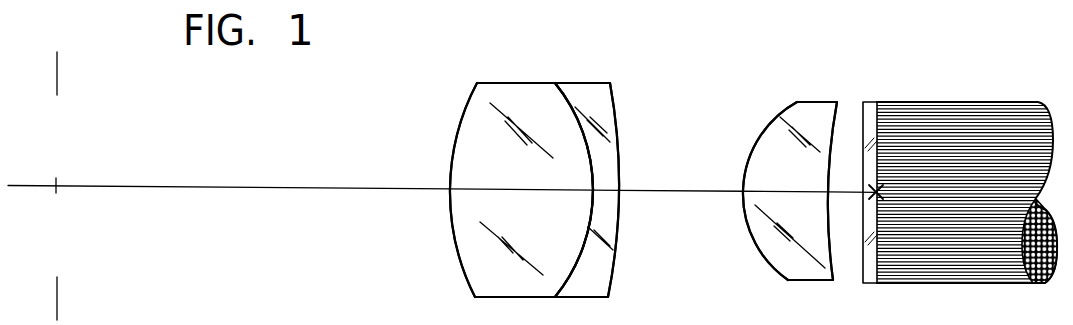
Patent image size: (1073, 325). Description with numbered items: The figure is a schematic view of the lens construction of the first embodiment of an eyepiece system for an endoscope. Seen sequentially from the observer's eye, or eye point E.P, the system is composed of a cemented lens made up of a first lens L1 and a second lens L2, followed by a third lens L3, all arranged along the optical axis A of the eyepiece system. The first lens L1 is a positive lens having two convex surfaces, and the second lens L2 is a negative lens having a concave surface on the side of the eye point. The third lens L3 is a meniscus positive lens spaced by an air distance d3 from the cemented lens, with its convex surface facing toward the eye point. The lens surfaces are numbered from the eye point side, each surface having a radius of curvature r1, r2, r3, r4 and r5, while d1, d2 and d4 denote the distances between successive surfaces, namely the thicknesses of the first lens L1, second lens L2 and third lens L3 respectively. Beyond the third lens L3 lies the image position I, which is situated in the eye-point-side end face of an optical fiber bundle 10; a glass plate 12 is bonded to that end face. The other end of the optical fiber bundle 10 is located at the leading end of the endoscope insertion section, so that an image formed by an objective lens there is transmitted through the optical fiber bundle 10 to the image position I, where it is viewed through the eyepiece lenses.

The eye point E.P is at (62, 184).
The optical axis A is at (243, 188).
The first lens L1 is at (518, 90).
The second lens L2 is at (597, 92).
The third lens L3 is at (817, 110).
The radius of curvature of the first surface r1 is at (467, 277).
The radius of curvature of the second surface r2 is at (557, 288).
The radius of curvature of the third surface r3 is at (615, 272).
The radius of curvature of the fourth surface r4 is at (777, 273).
The radius of curvature of the fifth surface r5 is at (835, 272).
The distance between the first surface and the second surface d1 is at (490, 191).
The distance between the second surface and the third surface d2 is at (603, 192).
The air distance d3 is at (697, 193).
The distance between the fourth surface and the fifth surface d4 is at (803, 192).
The glass plate 12 is at (873, 102).
The optical fiber bundle 10 is at (1003, 102).
The image position I is at (876, 192).